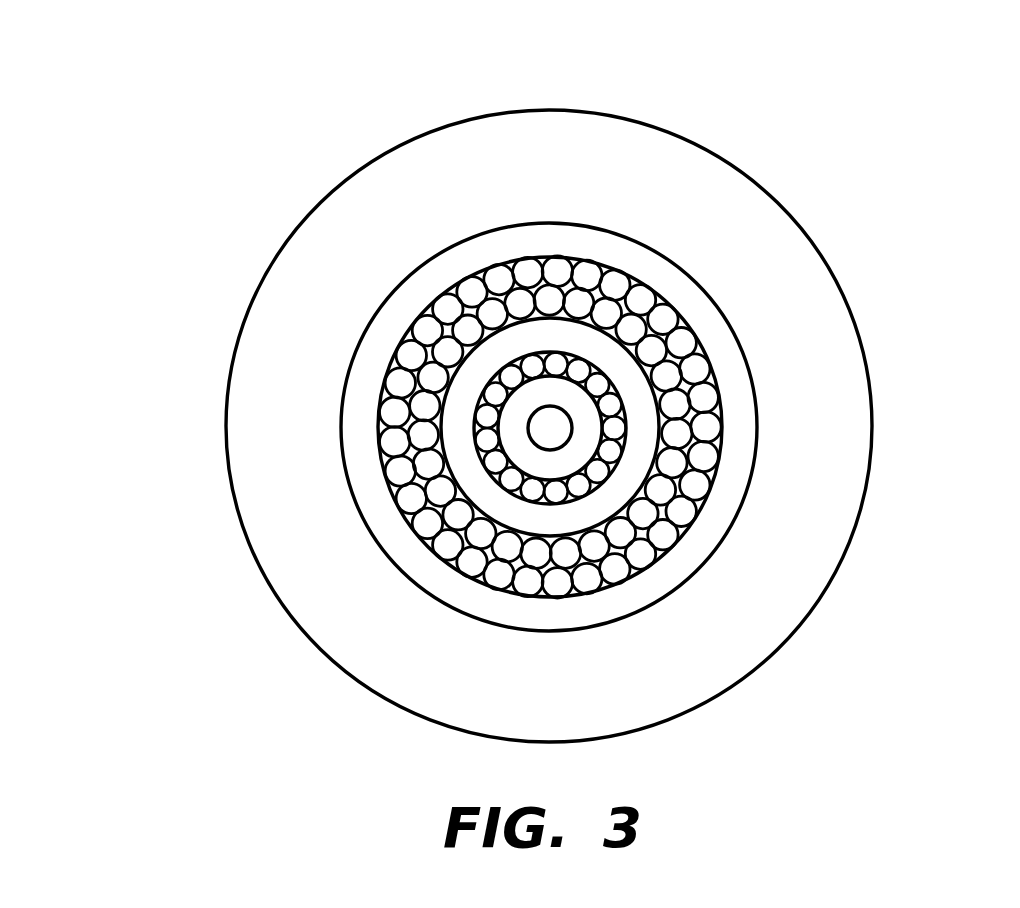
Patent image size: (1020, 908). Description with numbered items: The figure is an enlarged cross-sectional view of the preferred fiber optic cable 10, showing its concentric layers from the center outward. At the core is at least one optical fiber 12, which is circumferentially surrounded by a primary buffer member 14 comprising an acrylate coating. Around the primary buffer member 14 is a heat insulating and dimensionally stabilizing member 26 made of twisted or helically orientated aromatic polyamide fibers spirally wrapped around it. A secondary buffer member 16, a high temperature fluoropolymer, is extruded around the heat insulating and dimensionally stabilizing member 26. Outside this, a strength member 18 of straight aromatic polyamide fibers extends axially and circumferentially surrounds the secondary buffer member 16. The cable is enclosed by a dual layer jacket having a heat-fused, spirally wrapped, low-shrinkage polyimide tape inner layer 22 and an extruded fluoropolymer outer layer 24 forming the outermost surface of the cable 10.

The fiber optic cable 10 is at (154, 311).
The optical fiber 12 is at (547, 430).
The primary buffer member 14 is at (580, 438).
The secondary buffer member 16 is at (615, 492).
The strength member 18 is at (557, 582).
The inner layer 22 is at (622, 247).
The outer layer 24 is at (593, 133).
The heat insulating and dimensionally stabilizing member 26 is at (493, 461).